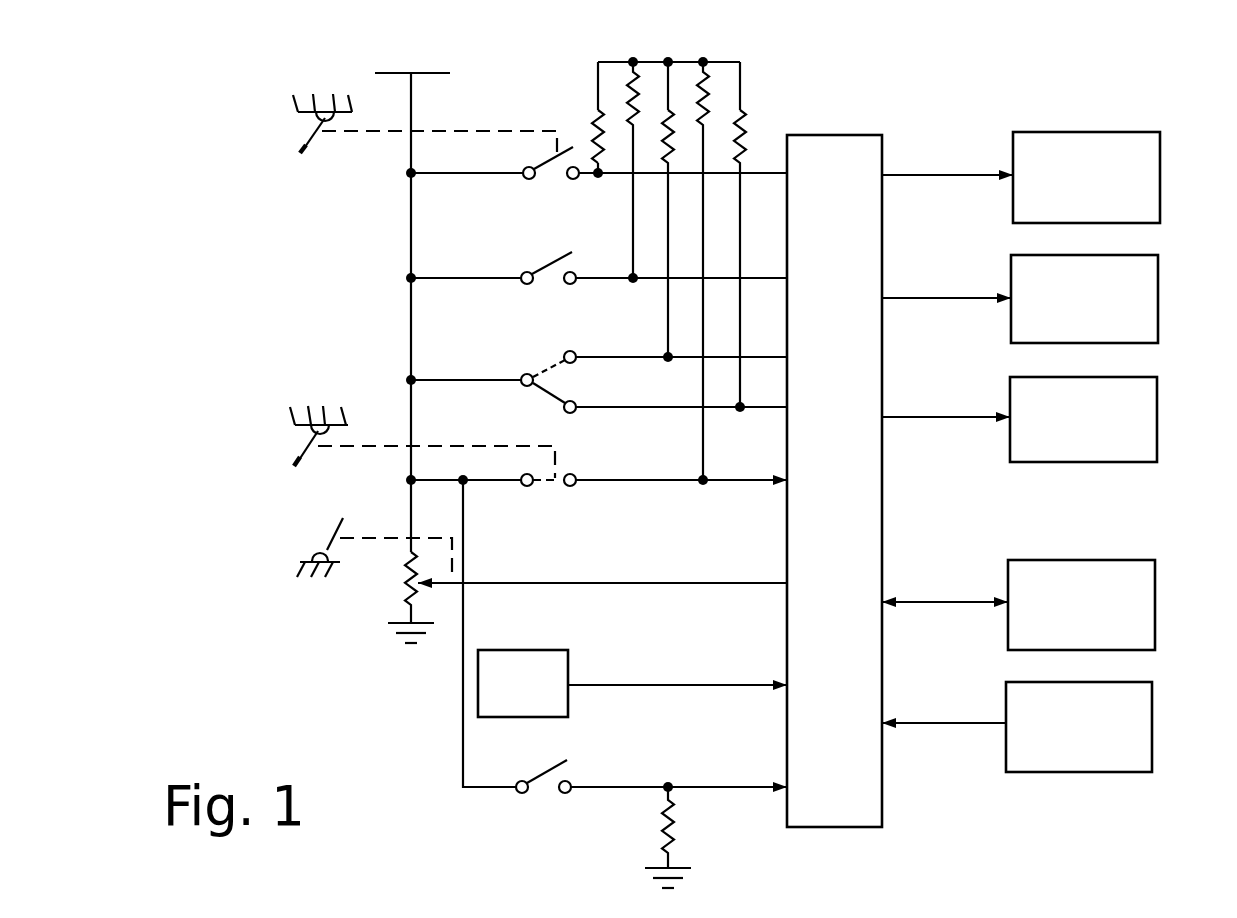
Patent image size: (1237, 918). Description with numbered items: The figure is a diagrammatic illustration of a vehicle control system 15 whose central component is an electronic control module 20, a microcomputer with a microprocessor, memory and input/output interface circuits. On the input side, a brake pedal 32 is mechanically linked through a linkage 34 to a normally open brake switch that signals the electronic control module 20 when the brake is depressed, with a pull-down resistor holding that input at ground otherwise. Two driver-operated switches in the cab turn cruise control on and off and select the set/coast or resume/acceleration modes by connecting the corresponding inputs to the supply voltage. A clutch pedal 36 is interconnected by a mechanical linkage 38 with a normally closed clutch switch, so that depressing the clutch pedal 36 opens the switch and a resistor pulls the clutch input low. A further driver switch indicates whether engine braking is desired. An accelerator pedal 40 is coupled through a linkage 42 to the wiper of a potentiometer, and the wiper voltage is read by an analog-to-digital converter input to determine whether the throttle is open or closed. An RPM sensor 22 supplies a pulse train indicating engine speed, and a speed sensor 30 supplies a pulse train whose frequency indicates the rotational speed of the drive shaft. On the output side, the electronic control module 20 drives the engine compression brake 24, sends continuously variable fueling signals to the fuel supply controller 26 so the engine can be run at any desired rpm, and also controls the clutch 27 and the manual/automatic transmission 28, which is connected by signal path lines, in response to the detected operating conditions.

The control system 15 is at (924, 812).
The electronic control module (ECM) 20 is at (882, 150).
The RPM sensor 22 is at (570, 665).
The engine compression brake 24 is at (1160, 178).
The fuel supply controller 26 is at (1158, 300).
The clutch 27 is at (1157, 418).
The manual/automatic transmission 28 is at (1155, 603).
The speed sensor 30 is at (1152, 725).
The brake pedal 32 is at (318, 119).
The linkage 34 is at (347, 133).
The clutch pedal 36 is at (312, 433).
The mechanical linkage 38 is at (345, 448).
The accelerator pedal 40 is at (337, 530).
The linkage 42 is at (372, 536).